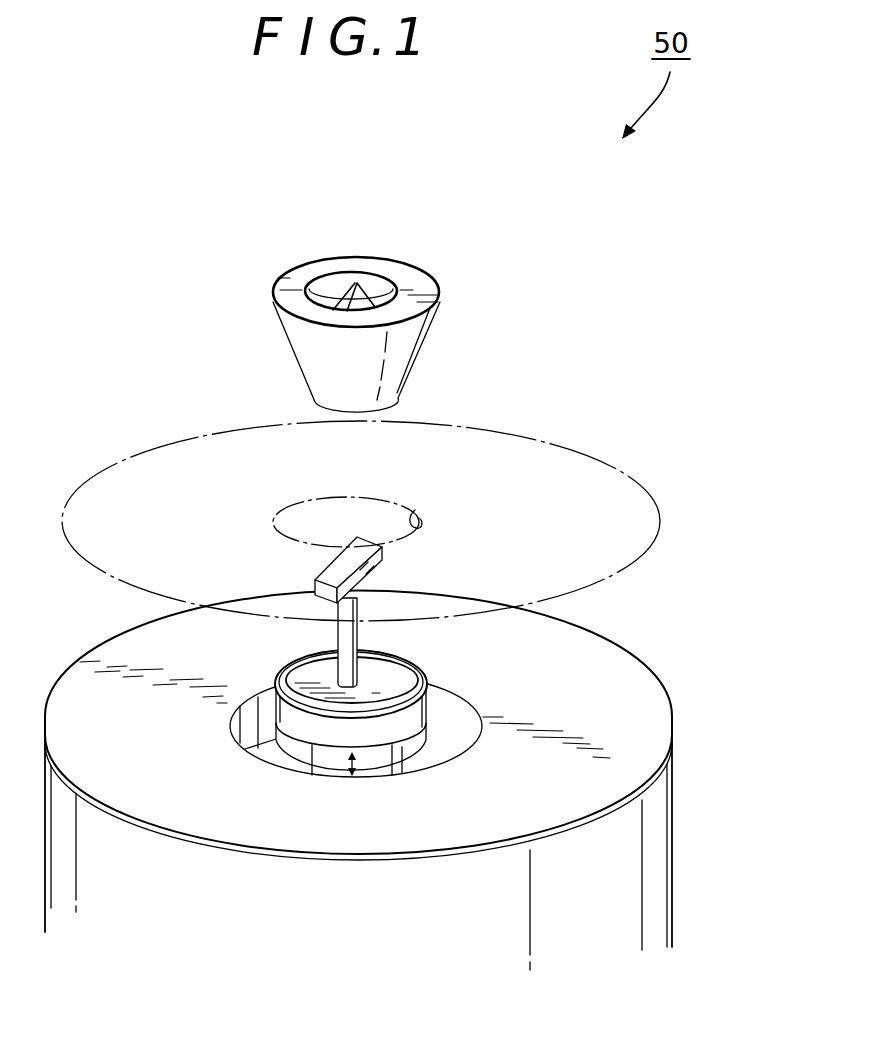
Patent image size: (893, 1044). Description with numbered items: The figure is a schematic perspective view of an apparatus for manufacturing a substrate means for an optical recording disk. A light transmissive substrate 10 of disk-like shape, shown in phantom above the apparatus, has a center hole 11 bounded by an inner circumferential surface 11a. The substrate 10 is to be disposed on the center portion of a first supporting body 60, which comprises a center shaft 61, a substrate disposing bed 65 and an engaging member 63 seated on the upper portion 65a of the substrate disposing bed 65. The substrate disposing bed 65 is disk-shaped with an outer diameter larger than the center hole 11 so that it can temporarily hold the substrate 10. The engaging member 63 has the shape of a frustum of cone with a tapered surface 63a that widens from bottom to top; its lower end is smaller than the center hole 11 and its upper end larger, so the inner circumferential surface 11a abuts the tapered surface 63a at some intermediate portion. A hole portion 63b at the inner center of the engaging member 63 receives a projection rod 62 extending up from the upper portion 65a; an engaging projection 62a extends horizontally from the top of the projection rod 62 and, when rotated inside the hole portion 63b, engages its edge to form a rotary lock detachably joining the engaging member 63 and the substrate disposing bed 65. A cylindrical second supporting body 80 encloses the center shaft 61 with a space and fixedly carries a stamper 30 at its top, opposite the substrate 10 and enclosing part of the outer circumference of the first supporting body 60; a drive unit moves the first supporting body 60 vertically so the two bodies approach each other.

The light transmissive substrate 10 is at (618, 507).
The center hole 11 is at (383, 513).
The inner circumferential surface 11a is at (425, 507).
The stamper 30 is at (620, 778).
The first supporting body 60 is at (425, 704).
The center shaft 61 is at (378, 768).
The projection rod 62 is at (347, 633).
The engaging projection 62a is at (357, 538).
The engaging member 63 is at (400, 357).
The tapered surface 63a is at (403, 388).
The hole portion 63b is at (357, 283).
The substrate disposing bed 65 is at (412, 718).
The upper portion 65a is at (390, 677).
The second supporting body 80 is at (652, 908).